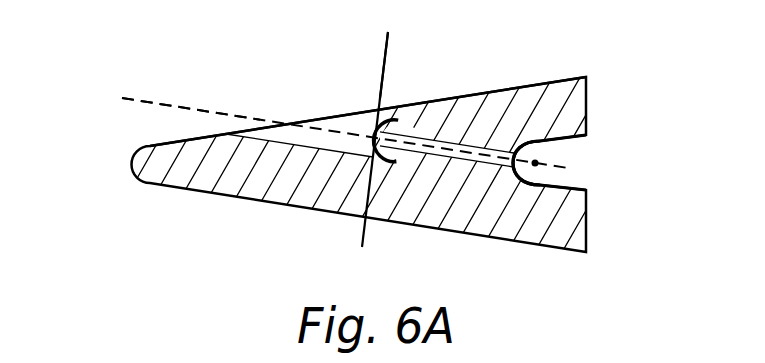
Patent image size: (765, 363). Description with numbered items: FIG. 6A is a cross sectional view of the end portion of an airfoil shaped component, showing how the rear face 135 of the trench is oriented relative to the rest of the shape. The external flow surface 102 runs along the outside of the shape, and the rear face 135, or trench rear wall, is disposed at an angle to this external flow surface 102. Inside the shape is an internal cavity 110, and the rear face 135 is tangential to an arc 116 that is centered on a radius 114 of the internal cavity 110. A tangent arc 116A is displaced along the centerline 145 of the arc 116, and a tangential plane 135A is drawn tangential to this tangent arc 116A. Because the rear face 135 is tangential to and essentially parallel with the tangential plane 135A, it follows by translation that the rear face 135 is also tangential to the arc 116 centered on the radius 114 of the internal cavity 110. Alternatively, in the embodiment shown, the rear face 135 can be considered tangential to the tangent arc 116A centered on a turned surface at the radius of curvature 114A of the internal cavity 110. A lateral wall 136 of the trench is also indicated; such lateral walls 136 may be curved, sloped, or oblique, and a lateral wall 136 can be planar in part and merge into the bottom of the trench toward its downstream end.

The external flow surface 102 is at (555, 77).
The internal cavity 110 is at (573, 158).
The radius 114 is at (536, 162).
The radius of curvature 114A is at (530, 174).
The arc 116 is at (523, 180).
The tangent arc 116A is at (396, 120).
The rear face 135 is at (378, 120).
The tangential plane 135A is at (388, 62).
The lateral wall 136 is at (338, 118).
The centerline 145 is at (157, 102).